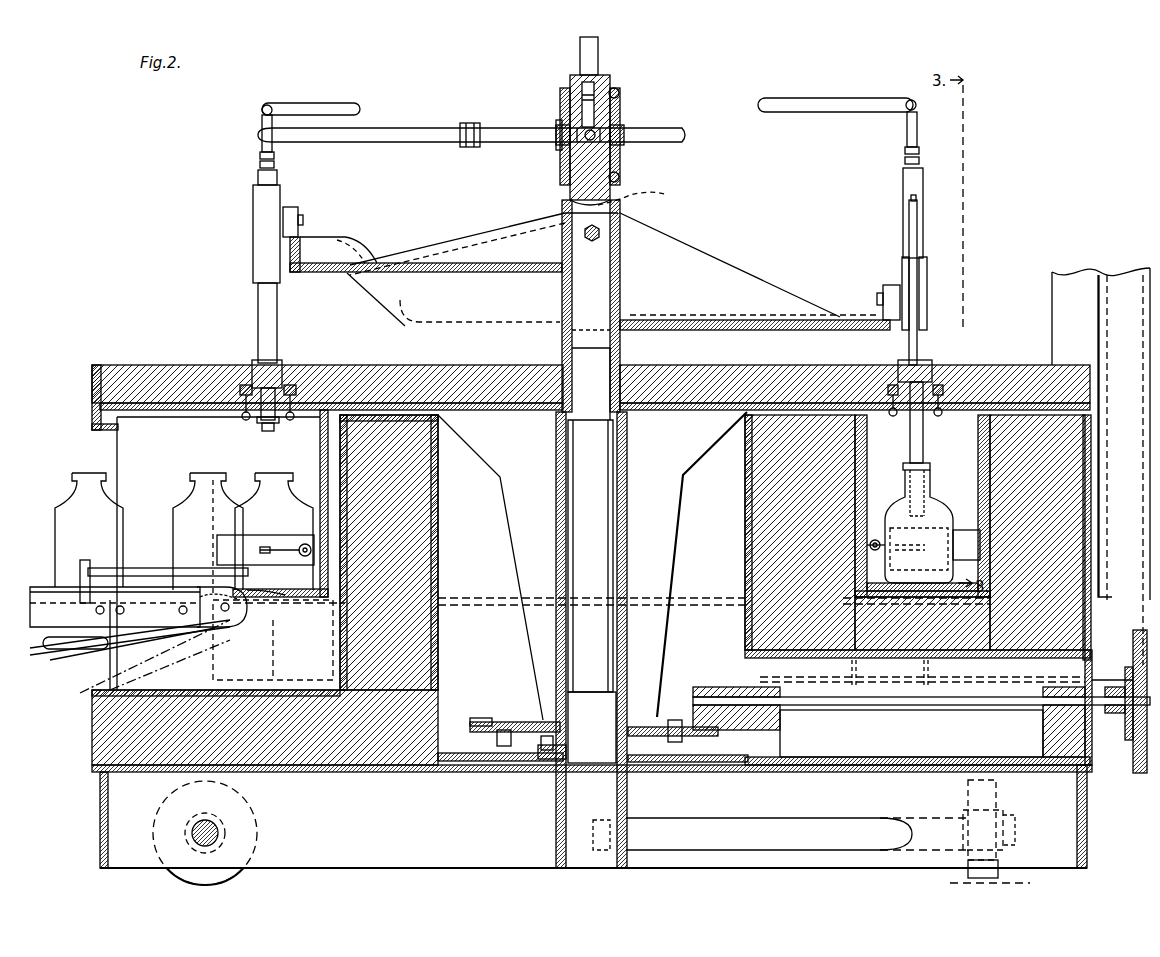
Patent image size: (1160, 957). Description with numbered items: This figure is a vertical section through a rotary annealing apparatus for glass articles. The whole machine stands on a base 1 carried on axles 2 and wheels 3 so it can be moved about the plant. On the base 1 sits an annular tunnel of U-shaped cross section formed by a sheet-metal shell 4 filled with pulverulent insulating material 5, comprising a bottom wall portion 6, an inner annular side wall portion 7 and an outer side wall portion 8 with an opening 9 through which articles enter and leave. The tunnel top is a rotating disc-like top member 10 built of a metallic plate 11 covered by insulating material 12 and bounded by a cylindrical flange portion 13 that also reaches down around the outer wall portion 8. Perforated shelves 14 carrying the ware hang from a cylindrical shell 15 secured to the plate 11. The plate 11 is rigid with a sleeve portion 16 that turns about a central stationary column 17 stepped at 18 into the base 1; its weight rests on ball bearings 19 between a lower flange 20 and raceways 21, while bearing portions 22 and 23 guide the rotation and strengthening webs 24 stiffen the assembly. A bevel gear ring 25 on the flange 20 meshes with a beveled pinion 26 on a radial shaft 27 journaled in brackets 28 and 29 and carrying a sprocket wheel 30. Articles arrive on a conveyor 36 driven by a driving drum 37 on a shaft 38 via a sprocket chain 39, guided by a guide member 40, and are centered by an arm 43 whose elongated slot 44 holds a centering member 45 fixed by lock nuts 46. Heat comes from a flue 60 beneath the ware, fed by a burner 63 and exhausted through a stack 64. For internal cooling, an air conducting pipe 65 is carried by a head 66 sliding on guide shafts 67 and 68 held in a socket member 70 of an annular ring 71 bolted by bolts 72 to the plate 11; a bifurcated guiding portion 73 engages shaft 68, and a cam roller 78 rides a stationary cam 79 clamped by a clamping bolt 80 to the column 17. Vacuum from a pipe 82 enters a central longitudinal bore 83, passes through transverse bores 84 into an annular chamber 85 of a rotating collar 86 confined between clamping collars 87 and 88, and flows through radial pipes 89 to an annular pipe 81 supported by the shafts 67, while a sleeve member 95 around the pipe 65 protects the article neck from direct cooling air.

The base 1 is at (1087, 795).
The axles 2 is at (215, 830).
The wheels 3 is at (255, 870).
The shell 4 is at (440, 508).
The insulating material 5 is at (440, 482).
The bottom wall portion 6 is at (290, 745).
The inner annular side wall portion 7 is at (437, 452).
The outer side wall portion 8 is at (1070, 500).
The opening 9 is at (137, 445).
The top member 10 is at (138, 380).
The metallic plate 11 is at (658, 415).
The insulating material 12 is at (713, 365).
The cylindrical flange portion 13 is at (92, 388).
The perforated shelves 14 is at (282, 597).
The cylindrical shell 15 is at (325, 460).
The sleeve portion 16 is at (630, 487).
The central stationary column 17 is at (596, 515).
The step 18 is at (627, 803).
The ball bearings 19 is at (542, 775).
The lower flange 20 is at (520, 750).
The ball bearing raceways 21 is at (650, 770).
The bearing portion 22 is at (622, 360).
The bearing portion 23 is at (615, 712).
The strengthening webs 24 is at (515, 520).
The bevel gear ring 25 is at (478, 718).
The beveled pinion 26 is at (705, 685).
The shaft 27 is at (858, 712).
The bracket 28 is at (790, 728).
The bracket 29 is at (1043, 737).
The sprocket wheel 30 is at (1135, 748).
The conveyor 36 is at (35, 588).
The driving drum 37 is at (332, 630).
The shaft 38 is at (225, 628).
The sprocket chain 39 is at (135, 683).
The guide member 40 is at (138, 568).
The arm 43 is at (228, 550).
The elongated slot 44 is at (273, 547).
The centering member 45 is at (872, 540).
The lock nuts 46 is at (305, 544).
The flue 60 is at (440, 627).
The burner 63 is at (55, 660).
The stack 64 is at (1126, 526).
The air conducting pipe 65 is at (922, 490).
The head 66 is at (262, 212).
The guide shaft 67 is at (272, 303).
The guide shaft 68 is at (910, 233).
The socket member 70 is at (262, 365).
The annular ring 71 is at (305, 365).
The bolts 72 is at (250, 420).
The bifurcated guiding portion 73 is at (927, 300).
The cam roller 78 is at (292, 207).
The stationary cam 79 is at (850, 318).
The clamping bolt 80 is at (595, 251).
The annular pipe 81 is at (335, 108).
The pipe 82 is at (592, 55).
The central longitudinal bore 83 is at (616, 85).
The transverse bores 84 is at (560, 152).
The annular chamber 85 is at (620, 128).
The rotating collar 86 is at (622, 163).
The clamping collar 87 is at (560, 88).
The clamping collar 88 is at (560, 180).
The radial pipes 89 is at (408, 128).
The sleeve member 95 is at (245, 395).